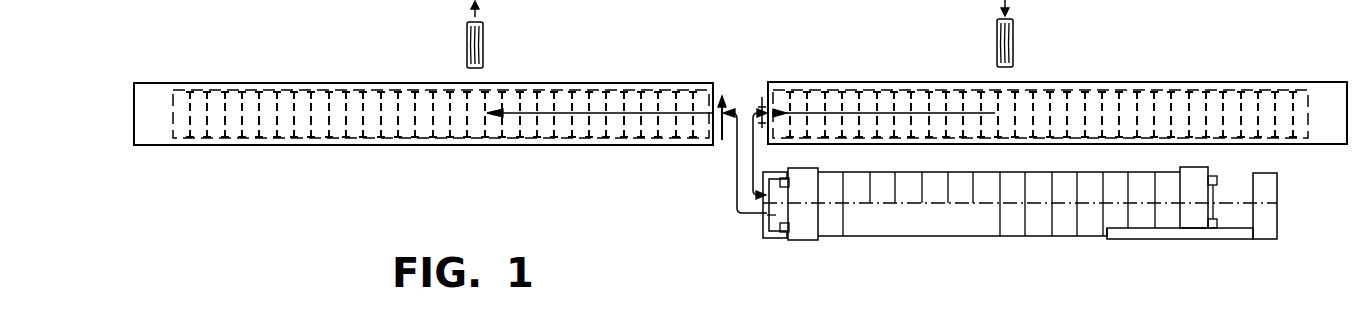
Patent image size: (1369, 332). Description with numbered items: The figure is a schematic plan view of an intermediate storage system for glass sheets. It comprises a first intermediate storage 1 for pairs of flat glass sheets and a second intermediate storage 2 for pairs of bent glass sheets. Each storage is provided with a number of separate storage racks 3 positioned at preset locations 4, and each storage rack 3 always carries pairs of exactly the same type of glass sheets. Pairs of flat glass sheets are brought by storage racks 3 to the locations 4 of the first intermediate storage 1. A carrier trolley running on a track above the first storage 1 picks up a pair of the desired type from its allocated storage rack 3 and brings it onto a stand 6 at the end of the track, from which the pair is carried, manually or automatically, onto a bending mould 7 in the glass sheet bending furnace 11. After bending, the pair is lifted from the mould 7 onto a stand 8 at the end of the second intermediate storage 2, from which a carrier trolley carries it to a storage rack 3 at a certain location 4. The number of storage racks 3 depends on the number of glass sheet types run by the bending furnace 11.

The first intermediate storage 1 is at (1057, 83).
The second intermediate storage 2 is at (365, 147).
The storage rack 3 is at (483, 43).
The preset locations 4 is at (1230, 97).
The stand 6 is at (761, 107).
The bending mould 7 is at (767, 217).
The stand 8 is at (722, 140).
The glass sheet bending furnace 11 is at (940, 245).